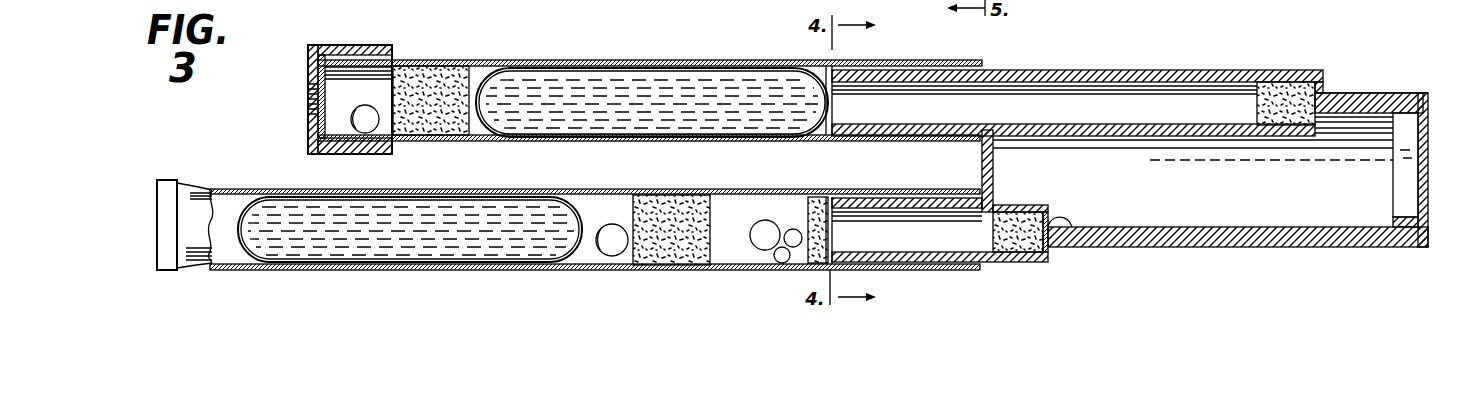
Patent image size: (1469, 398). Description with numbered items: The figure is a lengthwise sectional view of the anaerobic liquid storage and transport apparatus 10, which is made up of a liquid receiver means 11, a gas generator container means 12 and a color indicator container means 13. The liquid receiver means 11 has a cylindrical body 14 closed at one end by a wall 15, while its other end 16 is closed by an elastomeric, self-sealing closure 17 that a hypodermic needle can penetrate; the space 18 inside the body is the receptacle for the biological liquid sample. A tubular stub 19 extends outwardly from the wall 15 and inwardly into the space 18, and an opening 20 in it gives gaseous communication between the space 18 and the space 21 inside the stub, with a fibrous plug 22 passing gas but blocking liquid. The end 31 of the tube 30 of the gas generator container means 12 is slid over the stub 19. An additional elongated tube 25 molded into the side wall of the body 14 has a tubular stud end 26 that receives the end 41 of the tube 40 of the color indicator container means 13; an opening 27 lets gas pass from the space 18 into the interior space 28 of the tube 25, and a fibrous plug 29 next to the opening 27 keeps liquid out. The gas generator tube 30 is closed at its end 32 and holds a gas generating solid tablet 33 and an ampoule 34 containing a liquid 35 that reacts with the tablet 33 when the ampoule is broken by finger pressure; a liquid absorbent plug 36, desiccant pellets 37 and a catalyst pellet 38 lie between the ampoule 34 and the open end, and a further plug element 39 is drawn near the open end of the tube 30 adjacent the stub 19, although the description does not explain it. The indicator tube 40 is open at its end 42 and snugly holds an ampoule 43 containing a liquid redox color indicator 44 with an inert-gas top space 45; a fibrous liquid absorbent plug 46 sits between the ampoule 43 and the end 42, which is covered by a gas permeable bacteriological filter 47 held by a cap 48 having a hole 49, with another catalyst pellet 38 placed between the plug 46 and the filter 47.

The anaerobic liquid storage and transport apparatus 10 is at (1074, 44).
The liquid receiver means 11 is at (1228, 58).
The gas generator container means 12 is at (648, 176).
The color indicator container means 13 is at (502, 46).
The cylindrical body 14 is at (720, 58).
The wall 15 is at (985, 170).
The other end 16 is at (1400, 110).
The closure 17 is at (1432, 115).
The space 18 is at (1280, 205).
The tubular stub 19 is at (947, 255).
The opening 20 is at (1065, 228).
The space 21 is at (878, 240).
The fibrous plug 22 is at (1020, 242).
The elongated tube 25 is at (1077, 79).
The tubular stud end 26 is at (898, 74).
The opening 27 is at (1340, 110).
The interior space 28 is at (1140, 105).
The fibrous plug 29 is at (1285, 93).
The elongated plastic tube 30 is at (560, 270).
The end 31 is at (883, 192).
The end 32 is at (165, 180).
The gas generating solid tablet 33 is at (615, 247).
The ampoule 34 is at (392, 247).
The liquid 35 is at (305, 247).
The liquid absorbent plug 36 is at (686, 247).
The desiccant pellets 37 is at (782, 262).
The catalyst pellet 38 is at (380, 128).
The plug 39 is at (818, 205).
The elongated flexible transparent tube 40 is at (585, 60).
The end 41 is at (935, 63).
The end 42 is at (340, 67).
The ampoule 43 is at (652, 75).
The liquid redox color indicator 44 is at (720, 95).
The top space 45 is at (540, 80).
The fibrous liquid absorbent plug 46 is at (424, 74).
The bacteriological filter 47 is at (318, 124).
The cap 48 is at (308, 62).
The hole 49 is at (310, 110).